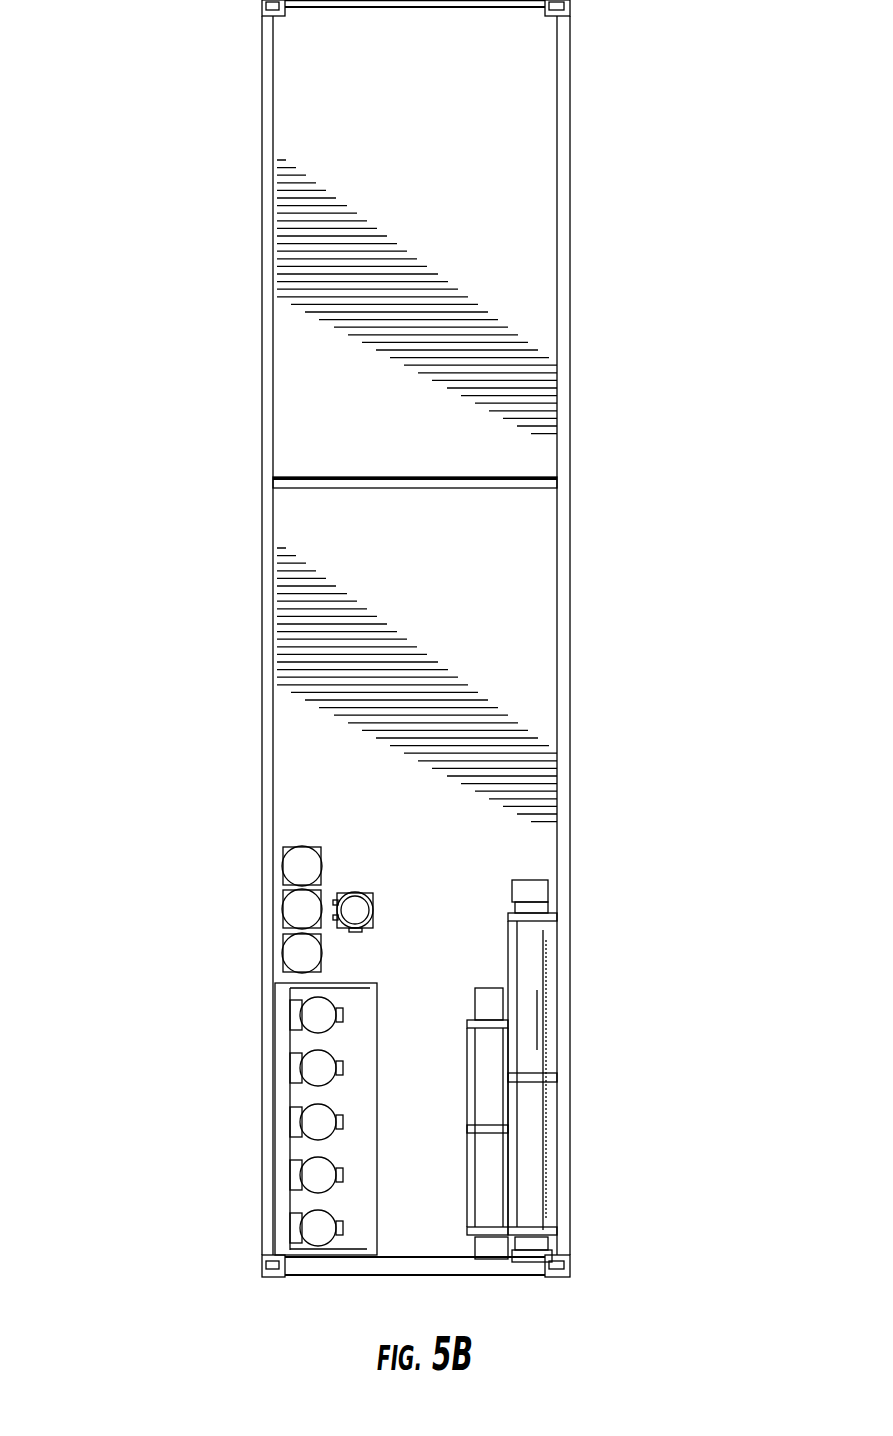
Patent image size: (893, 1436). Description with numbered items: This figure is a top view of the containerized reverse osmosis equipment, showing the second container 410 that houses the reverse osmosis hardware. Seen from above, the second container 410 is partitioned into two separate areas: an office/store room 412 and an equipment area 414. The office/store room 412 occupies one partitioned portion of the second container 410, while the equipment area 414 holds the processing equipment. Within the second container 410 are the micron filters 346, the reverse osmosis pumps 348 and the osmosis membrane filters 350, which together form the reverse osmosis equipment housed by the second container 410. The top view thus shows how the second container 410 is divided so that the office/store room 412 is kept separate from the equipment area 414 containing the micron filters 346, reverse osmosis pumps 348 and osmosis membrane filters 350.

The second container 410 is at (688, 366).
The office/store room 412 is at (498, 200).
The equipment area 414 is at (522, 612).
The micron filters 346 is at (292, 873).
The reverse osmosis pumps 348 is at (303, 1123).
The osmosis membrane filters 350 is at (537, 1017).